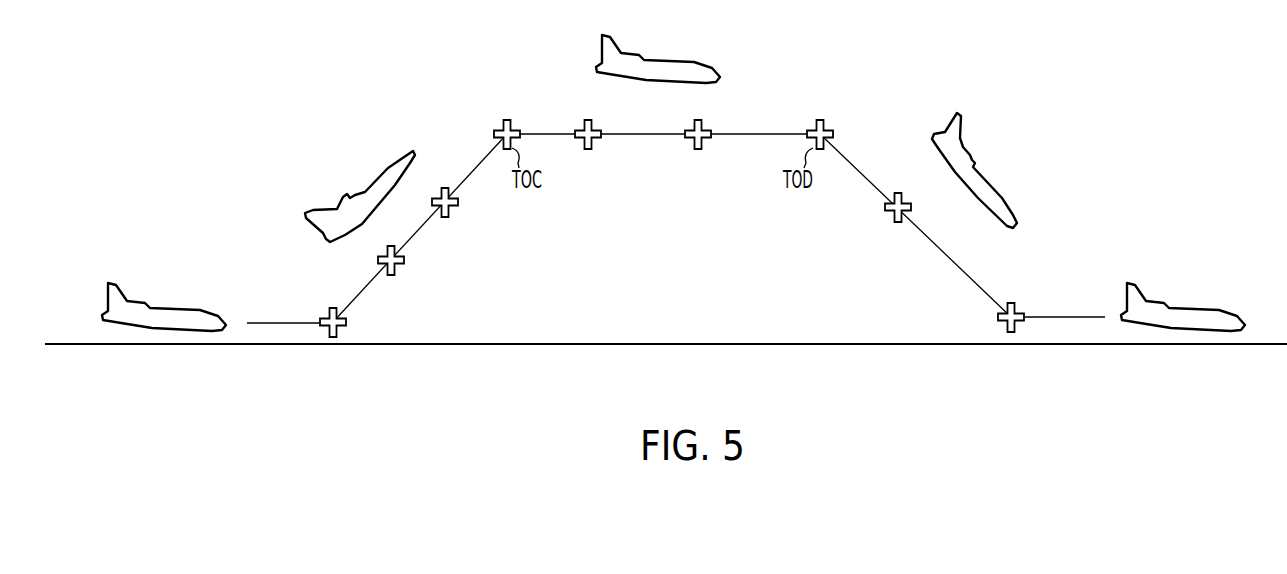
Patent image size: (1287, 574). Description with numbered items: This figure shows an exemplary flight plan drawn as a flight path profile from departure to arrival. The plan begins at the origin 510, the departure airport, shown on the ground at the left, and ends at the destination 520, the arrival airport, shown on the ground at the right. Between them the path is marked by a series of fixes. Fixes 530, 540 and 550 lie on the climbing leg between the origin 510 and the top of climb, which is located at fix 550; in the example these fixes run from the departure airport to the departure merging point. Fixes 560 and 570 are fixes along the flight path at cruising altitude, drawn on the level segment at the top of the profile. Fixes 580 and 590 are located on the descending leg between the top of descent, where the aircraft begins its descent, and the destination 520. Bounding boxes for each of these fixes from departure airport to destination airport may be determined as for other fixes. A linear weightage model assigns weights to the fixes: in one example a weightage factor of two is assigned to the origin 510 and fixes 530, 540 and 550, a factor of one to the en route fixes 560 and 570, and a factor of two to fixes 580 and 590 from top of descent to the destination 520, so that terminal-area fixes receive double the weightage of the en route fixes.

The origin 510 is at (328, 317).
The destination 520 is at (1042, 297).
The fix 530 is at (398, 267).
The fix 540 is at (452, 209).
The fix 550 is at (505, 120).
The fix 560 is at (590, 149).
The fix 570 is at (697, 149).
The fix 580 is at (820, 120).
The fix 590 is at (888, 217).